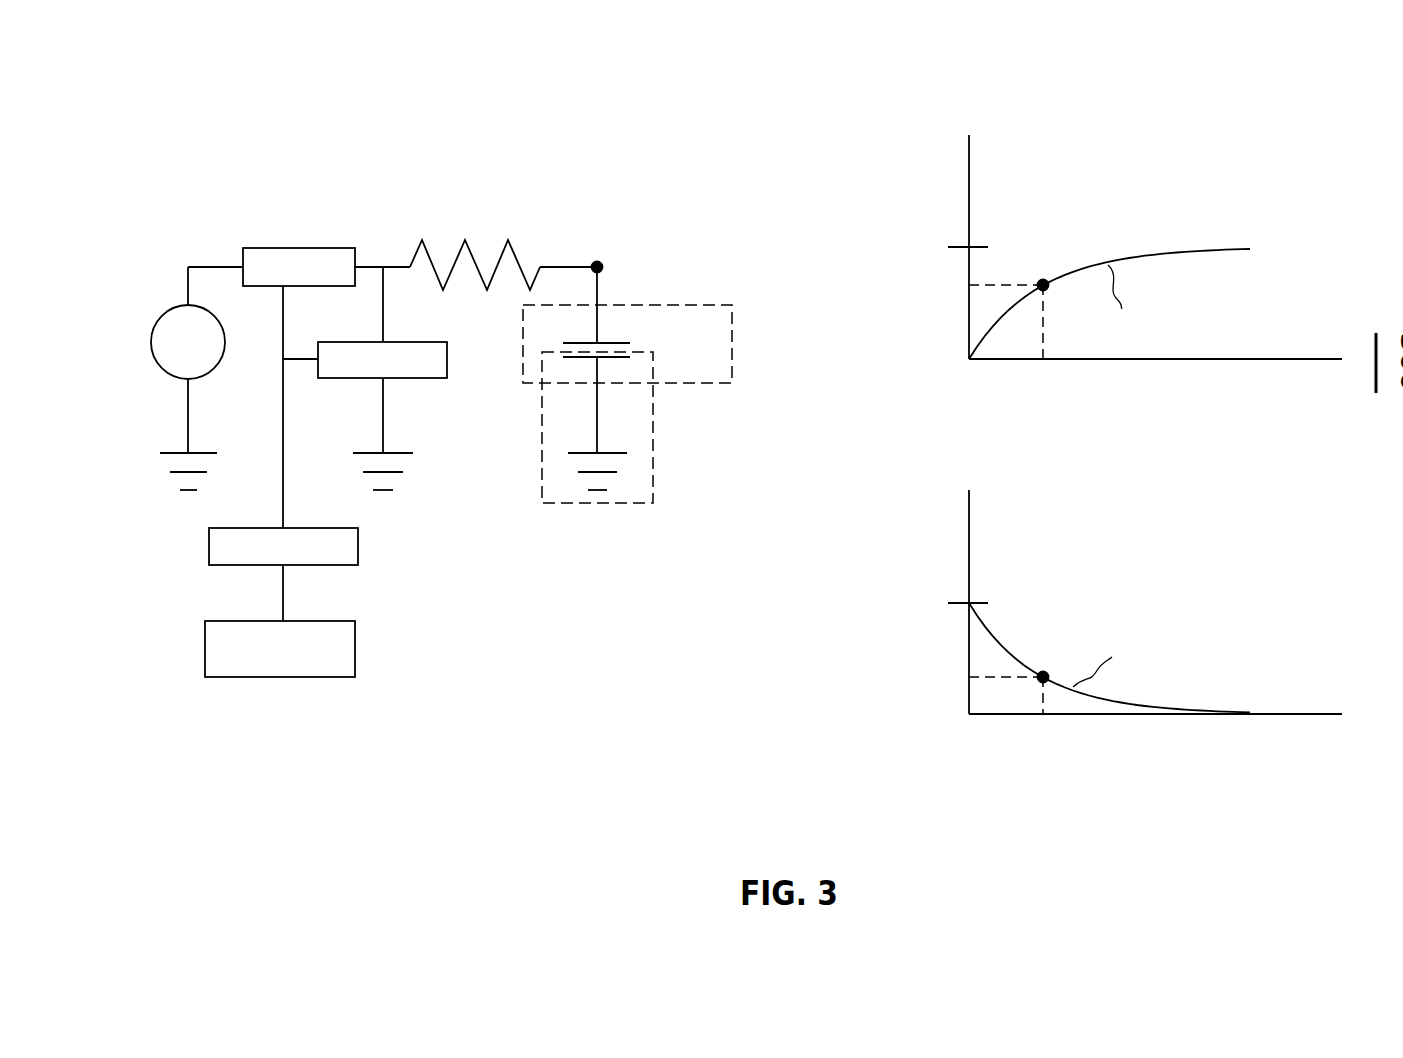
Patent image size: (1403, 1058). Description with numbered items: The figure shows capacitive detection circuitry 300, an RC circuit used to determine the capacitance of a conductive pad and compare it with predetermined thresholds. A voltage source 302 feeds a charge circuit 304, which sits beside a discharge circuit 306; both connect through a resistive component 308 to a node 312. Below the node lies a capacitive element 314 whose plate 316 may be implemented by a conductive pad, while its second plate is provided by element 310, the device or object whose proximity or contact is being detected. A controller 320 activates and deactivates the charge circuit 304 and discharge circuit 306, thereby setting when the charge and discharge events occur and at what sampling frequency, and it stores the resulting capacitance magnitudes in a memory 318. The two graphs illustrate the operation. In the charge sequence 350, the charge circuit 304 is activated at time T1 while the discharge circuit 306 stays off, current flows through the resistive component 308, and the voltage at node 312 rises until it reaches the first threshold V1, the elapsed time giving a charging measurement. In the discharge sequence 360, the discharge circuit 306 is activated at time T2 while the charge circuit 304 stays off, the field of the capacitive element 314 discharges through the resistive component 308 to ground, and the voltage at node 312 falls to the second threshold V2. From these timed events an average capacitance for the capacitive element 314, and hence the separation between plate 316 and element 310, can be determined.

The capacitive detection circuitry 300 is at (268, 161).
The voltage source 302 is at (151, 342).
The charge circuit 304 is at (278, 248).
The discharge circuit 306 is at (447, 368).
The resistive component 308 is at (478, 282).
The element 310 is at (653, 493).
The node 312 is at (600, 262).
The capacitive element 314 is at (732, 359).
The plate 316 is at (620, 343).
The memory 318 is at (355, 667).
The controller 320 is at (358, 553).
The charge sequence 350 is at (1190, 163).
The discharge sequence 360 is at (1237, 543).